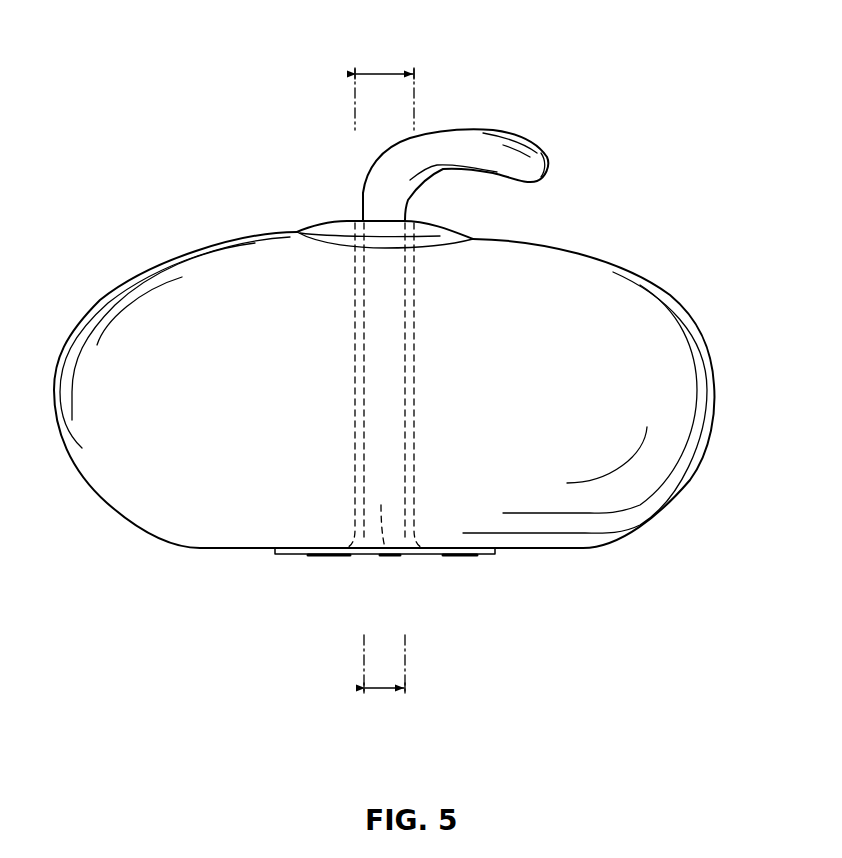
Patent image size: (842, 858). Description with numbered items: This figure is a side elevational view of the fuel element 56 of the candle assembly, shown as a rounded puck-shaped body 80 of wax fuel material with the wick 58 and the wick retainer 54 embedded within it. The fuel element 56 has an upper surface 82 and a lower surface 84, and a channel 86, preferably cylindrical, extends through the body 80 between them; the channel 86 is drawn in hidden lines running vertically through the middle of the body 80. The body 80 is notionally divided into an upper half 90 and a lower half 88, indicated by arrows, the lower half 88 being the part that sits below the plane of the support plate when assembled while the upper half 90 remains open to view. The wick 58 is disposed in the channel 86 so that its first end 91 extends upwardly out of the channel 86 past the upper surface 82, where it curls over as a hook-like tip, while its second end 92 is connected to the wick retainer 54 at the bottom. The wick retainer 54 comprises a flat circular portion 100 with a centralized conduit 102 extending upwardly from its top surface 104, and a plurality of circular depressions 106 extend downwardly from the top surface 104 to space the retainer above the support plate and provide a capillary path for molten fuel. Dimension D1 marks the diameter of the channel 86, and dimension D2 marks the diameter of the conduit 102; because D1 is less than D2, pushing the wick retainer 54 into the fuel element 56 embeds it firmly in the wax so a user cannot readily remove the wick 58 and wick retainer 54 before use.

The wick retainer 54 is at (435, 555).
The fuel element 56 is at (663, 335).
The wick 58 is at (477, 137).
The body 80 is at (662, 432).
The upper surface 82 is at (272, 230).
The lower surface 84 is at (243, 549).
The channel 86 is at (413, 298).
The lower half 88 is at (162, 509).
The upper half 90 is at (186, 345).
The first end 91 is at (547, 152).
The second end 92 is at (385, 548).
The flat circular portion 100 is at (340, 555).
The conduit 102 is at (417, 502).
The top surface 104 is at (300, 548).
The circular depressions 106 is at (443, 560).
The diameter of the channel D1 is at (385, 72).
The diameter of the conduit D2 is at (385, 688).